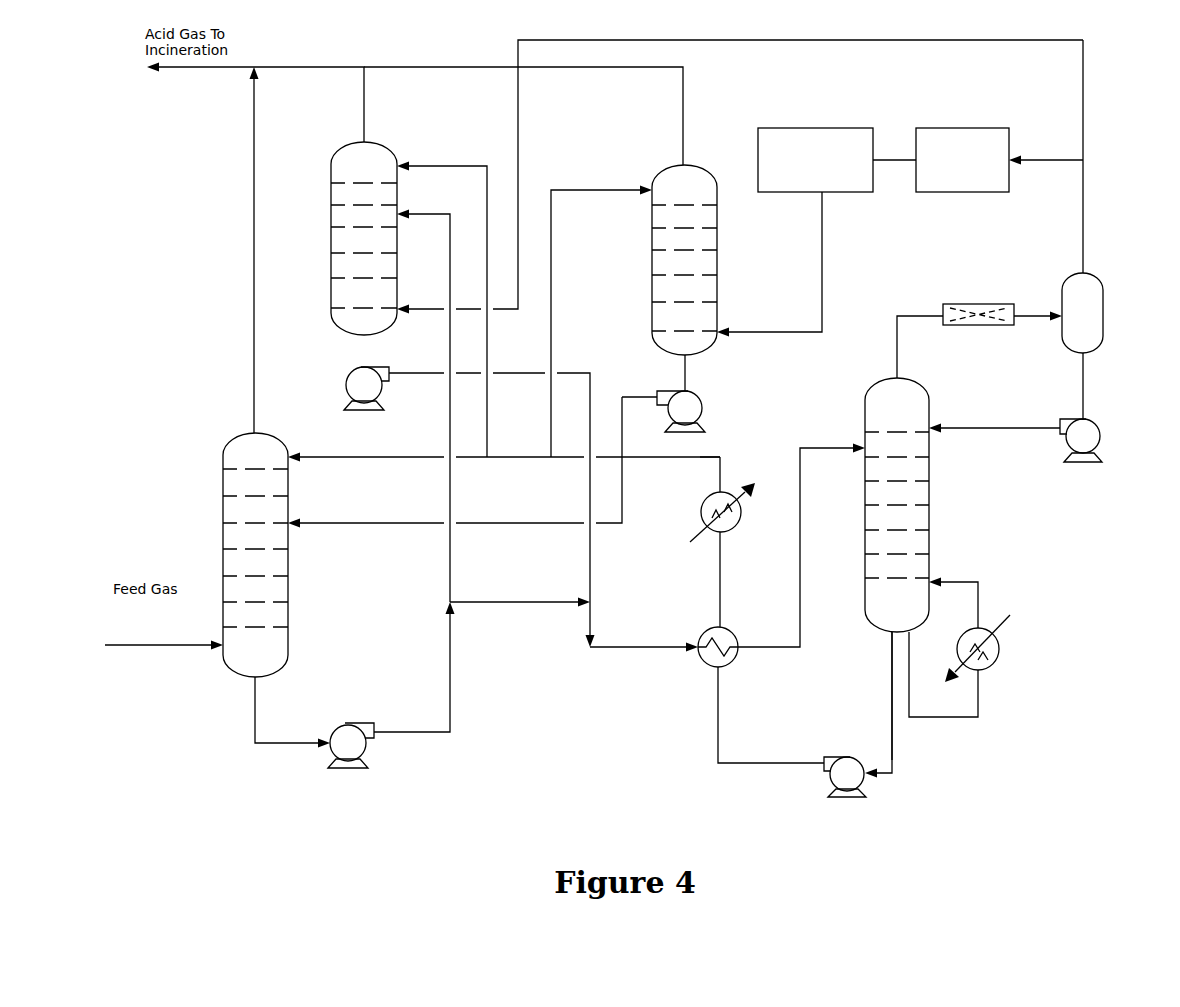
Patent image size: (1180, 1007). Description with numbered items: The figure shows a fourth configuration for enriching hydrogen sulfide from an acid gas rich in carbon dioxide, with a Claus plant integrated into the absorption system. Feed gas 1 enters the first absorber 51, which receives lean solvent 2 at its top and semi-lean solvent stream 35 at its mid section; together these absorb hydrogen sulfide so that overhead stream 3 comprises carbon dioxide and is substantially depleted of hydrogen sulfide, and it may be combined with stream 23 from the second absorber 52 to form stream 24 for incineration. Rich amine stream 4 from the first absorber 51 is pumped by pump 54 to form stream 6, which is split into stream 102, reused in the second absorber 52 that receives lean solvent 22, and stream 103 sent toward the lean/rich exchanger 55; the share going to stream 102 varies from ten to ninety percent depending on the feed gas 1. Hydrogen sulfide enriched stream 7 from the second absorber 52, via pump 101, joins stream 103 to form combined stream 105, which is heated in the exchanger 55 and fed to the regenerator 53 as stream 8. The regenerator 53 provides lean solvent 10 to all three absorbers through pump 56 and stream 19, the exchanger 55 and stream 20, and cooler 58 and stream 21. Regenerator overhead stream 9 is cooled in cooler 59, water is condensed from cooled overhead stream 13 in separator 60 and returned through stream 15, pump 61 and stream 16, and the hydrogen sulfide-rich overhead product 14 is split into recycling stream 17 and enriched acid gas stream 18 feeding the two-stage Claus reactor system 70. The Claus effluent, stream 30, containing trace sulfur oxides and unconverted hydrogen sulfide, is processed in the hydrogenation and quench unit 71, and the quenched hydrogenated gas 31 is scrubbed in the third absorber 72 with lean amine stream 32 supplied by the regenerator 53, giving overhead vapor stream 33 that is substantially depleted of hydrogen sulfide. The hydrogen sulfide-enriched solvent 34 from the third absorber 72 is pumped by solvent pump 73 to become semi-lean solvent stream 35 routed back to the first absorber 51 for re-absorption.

The feed gas 1 is at (142, 645).
The lean solvent 2 is at (409, 456).
The overhead stream 3 is at (254, 272).
The rich amine stream 4 is at (255, 714).
The stream 6 is at (421, 731).
The hydrogen sulfide enriched stream 7 is at (433, 372).
The stream 8 is at (800, 612).
The regenerator overhead stream 9 is at (897, 312).
The lean solvent 10 is at (892, 702).
The cooled overhead stream 13 is at (1053, 315).
The hydrogen sulfide-rich overhead product 14 is at (1083, 242).
The stream 15 is at (1083, 396).
The stream 16 is at (997, 427).
The recycling stream 17 is at (1005, 39).
The enriched acid gas stream 18 is at (1055, 159).
The stream 19 is at (782, 762).
The stream 20 is at (720, 606).
The stream 21 is at (655, 459).
The lean solvent 22 is at (462, 165).
The stream 23 is at (320, 65).
The stream 24 is at (187, 68).
The effluent gas stream 30 is at (906, 159).
The quenched hydrogenated gas 31 is at (800, 331).
The lean amine stream 32 is at (600, 189).
The overhead vapor stream 33 is at (452, 66).
The hydrogen sulfide-enriched solvent 34 is at (685, 372).
The semi-lean solvent stream 35 is at (393, 522).
The first absorber 51 is at (223, 522).
The second absorber 52 is at (331, 246).
The regenerator 53 is at (865, 521).
The pump 54 is at (345, 769).
The lean/rich exchanger 55 is at (735, 663).
The pump 56 is at (840, 798).
The cooler 58 is at (703, 513).
The cooler 59 is at (982, 304).
The separator 60 is at (1100, 346).
The pump 61 is at (1090, 463).
The two-stage Claus reactor system 70 is at (975, 128).
The hydrogenation and quench unit 71 is at (822, 128).
The third absorber 72 is at (660, 171).
The solvent pump 73 is at (701, 409).
The pump 101 is at (372, 411).
The stream 102 is at (450, 561).
The stream 103 is at (530, 601).
The combined stream 105 is at (655, 646).